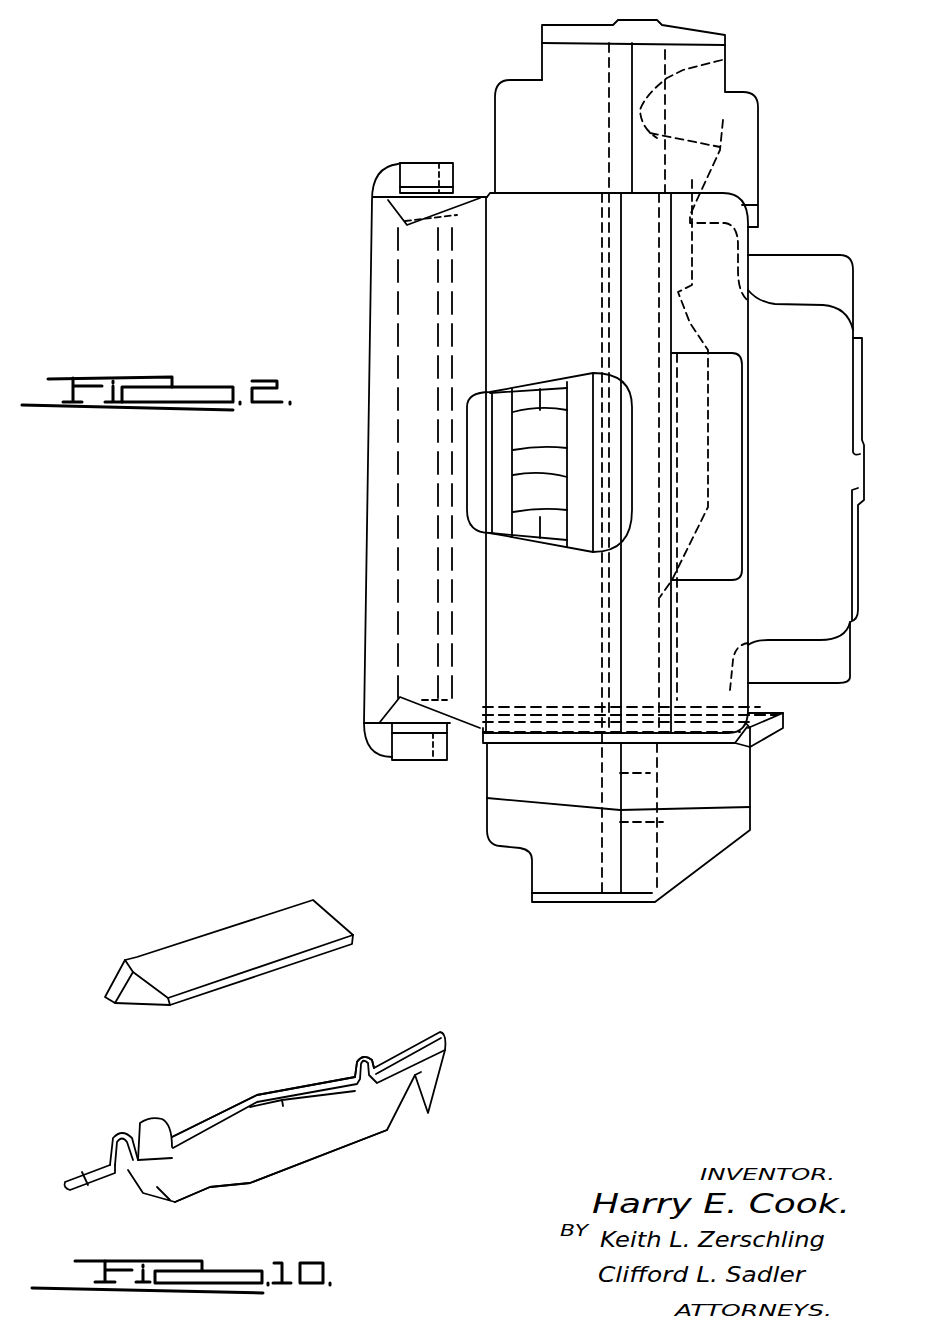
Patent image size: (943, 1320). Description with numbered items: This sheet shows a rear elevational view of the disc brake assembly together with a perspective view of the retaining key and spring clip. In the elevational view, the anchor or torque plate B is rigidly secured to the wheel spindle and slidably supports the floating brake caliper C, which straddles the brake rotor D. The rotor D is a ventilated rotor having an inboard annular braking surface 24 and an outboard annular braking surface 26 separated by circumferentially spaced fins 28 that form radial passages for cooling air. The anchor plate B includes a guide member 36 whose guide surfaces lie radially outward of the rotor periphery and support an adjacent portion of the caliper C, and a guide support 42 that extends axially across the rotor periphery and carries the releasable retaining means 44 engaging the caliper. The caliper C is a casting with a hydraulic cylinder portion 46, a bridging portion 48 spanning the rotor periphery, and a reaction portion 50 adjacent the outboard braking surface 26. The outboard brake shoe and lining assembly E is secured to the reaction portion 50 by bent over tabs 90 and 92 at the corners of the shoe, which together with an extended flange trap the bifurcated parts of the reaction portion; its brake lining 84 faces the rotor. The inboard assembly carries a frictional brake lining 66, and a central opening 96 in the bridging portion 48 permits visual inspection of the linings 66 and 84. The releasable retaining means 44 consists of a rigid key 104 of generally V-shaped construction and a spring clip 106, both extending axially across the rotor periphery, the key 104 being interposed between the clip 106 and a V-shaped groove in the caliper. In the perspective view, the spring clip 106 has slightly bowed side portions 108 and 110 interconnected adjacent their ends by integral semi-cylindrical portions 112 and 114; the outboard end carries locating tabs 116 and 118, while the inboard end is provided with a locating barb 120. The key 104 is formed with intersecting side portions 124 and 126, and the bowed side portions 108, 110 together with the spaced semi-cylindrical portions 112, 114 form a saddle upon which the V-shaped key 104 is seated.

In FIG. 2, the guide member 36 is at (507, 88).
In FIG. 2, the bridging portion 48 is at (532, 192).
In FIG. 2, the reaction portion 50 is at (372, 296).
In FIG. 2, the bent over tab 90 is at (410, 163).
In FIG. 2, the bent over tab 92 is at (410, 742).
In FIG. 2, the brake lining 84 is at (477, 423).
In FIG. 2, the outboard annular braking surface 26 is at (498, 400).
In FIG. 2, the fins 28 is at (532, 462).
In FIG. 2, the inboard annular braking surface 24 is at (573, 497).
In FIG. 2, the frictional brake lining 66 is at (612, 398).
In FIG. 2, the central opening 96 is at (582, 550).
In FIG. 2, the hydraulic cylinder portion 46 is at (778, 320).
In FIG. 2, the guide support 42 is at (727, 780).
In FIG. 2, the releasable retaining means 44 is at (772, 738).
In FIG. 2, the rigid key 104 is at (540, 705).
In FIG. 10, the rigid key 104 is at (336, 903).
In FIG. 2, the spring clip 106 is at (768, 710).
In FIG. 10, the spring clip 106 is at (452, 1043).
In FIG. 10, the bowed side portion 108 is at (300, 1153).
In FIG. 10, the bowed side portion 110 is at (215, 1110).
In FIG. 10, the semi-cylindrical portion 112 is at (148, 1128).
In FIG. 10, the semi-cylindrical portion 114 is at (381, 1052).
In FIG. 10, the locating tab 116 is at (140, 1177).
In FIG. 10, the locating tab 118 is at (87, 1178).
In FIG. 10, the locating barb 120 is at (440, 1082).
In FIG. 10, the intersecting side portion 124 is at (110, 975).
In FIG. 10, the intersecting side portion 126 is at (158, 993).
In FIG. 2, the anchor or torque plate B is at (763, 116).
In FIG. 2, the floating brake caliper C is at (370, 234).
In FIG. 2, the brake rotor D is at (550, 393).
In FIG. 2, the outboard brake shoe and lining assembly E is at (456, 167).